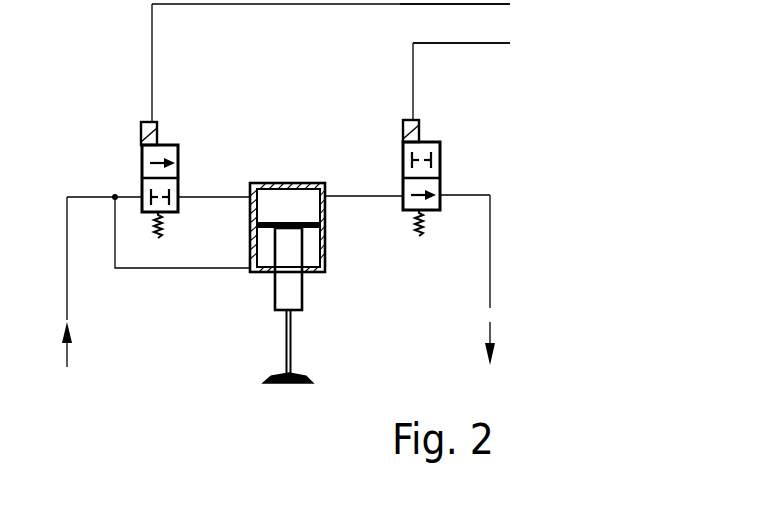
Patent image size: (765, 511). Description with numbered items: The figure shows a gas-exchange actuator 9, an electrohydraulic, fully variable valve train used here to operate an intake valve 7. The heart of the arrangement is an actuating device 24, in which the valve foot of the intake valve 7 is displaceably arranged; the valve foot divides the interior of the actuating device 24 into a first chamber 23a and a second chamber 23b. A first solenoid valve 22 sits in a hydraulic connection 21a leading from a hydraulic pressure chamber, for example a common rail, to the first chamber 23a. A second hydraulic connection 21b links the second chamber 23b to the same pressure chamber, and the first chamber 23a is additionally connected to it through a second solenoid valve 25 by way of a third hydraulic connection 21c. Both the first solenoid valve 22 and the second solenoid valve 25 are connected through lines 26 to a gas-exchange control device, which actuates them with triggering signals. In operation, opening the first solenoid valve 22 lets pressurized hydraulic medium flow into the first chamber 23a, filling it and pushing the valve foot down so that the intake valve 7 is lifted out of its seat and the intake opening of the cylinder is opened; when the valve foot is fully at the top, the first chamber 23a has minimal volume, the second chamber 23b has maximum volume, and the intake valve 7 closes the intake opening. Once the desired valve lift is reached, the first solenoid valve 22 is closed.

The gas-exchange actuator 9 is at (92, 103).
The intake valve 7 is at (292, 341).
The hydraulic connection 21a is at (67, 298).
The second hydraulic connection 21b is at (192, 268).
The third hydraulic connection 21c is at (490, 255).
The first solenoid valve 22 is at (177, 144).
The first chamber 23a is at (301, 208).
The second chamber 23b is at (262, 258).
The actuating device 24 is at (296, 183).
The second solenoid valve 25 is at (432, 143).
The lines 26 is at (437, 5).